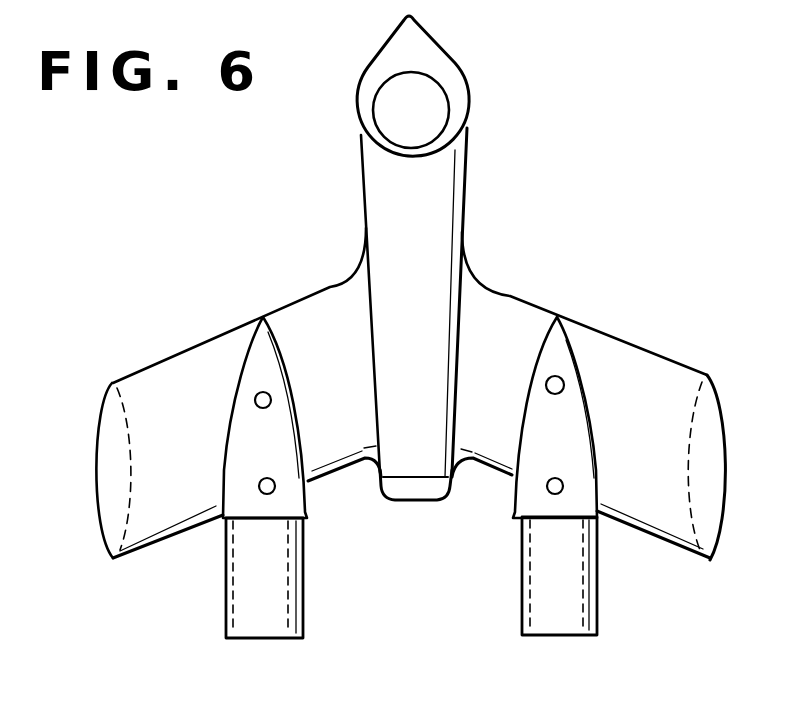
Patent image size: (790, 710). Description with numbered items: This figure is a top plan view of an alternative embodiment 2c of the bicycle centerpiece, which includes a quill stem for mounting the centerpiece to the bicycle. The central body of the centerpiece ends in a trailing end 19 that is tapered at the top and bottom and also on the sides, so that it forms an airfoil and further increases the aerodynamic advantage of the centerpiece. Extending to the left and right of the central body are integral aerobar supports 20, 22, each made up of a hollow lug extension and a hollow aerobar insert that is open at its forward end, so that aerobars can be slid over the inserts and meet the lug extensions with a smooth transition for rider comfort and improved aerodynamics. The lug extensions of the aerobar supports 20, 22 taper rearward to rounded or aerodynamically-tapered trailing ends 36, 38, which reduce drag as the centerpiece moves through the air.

The trailing end 19 is at (378, 55).
The alternative embodiment of the centerpiece 2c is at (607, 187).
The trailing end 36 is at (263, 318).
The trailing end 38 is at (557, 318).
The left aerobar support 20 is at (307, 517).
The right aerobar support 22 is at (522, 515).